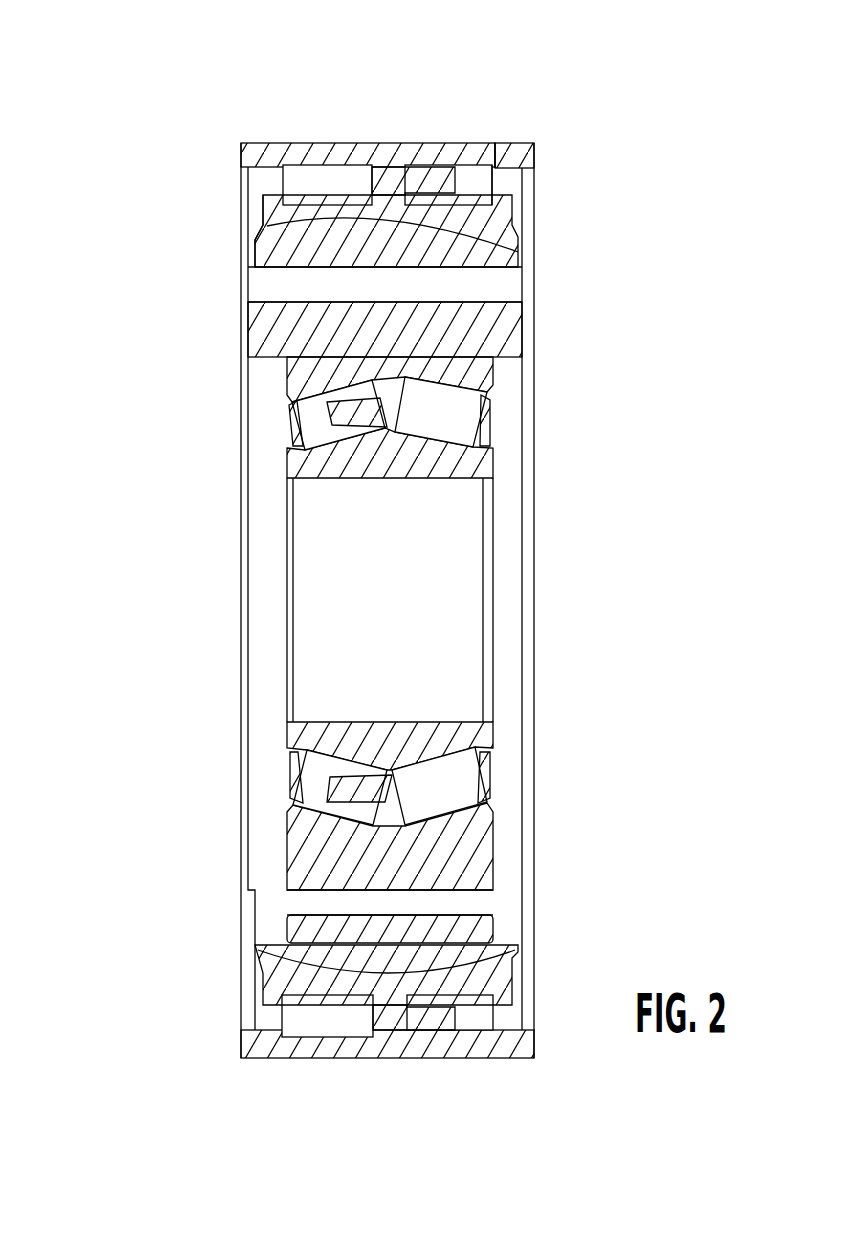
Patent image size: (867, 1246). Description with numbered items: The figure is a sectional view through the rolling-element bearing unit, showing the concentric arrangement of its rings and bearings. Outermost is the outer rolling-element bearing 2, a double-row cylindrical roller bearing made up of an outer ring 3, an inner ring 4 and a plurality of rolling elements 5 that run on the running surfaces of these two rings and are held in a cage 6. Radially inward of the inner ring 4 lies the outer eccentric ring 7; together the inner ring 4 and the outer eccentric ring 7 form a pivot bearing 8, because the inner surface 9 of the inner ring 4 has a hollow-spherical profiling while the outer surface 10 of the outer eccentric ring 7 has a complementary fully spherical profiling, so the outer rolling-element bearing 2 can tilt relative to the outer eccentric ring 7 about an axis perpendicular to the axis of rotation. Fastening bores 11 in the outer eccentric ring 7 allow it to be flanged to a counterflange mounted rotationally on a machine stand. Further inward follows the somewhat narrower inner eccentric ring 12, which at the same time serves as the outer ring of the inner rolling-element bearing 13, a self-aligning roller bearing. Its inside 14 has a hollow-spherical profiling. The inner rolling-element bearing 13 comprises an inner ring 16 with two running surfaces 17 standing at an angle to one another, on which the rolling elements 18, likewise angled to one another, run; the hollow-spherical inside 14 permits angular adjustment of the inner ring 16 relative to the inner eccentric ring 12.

The outer rolling-element bearing 2 is at (228, 175).
The outer ring 3 is at (487, 145).
The inner ring 4 is at (495, 200).
The rolling elements 5 is at (470, 183).
The cage 6 is at (397, 187).
The outer eccentric ring 7 is at (520, 252).
The pivot bearing 8 is at (523, 235).
The inner surface 9 is at (257, 268).
The outer surface 10 is at (302, 245).
The fastening bores 11 is at (495, 287).
The inner eccentric ring 12 is at (470, 375).
The inner rolling-element bearing 13 is at (542, 378).
The inside 14 is at (340, 382).
The inner ring 16 is at (380, 436).
The running surfaces 17 is at (418, 452).
The rolling elements 18 is at (363, 433).